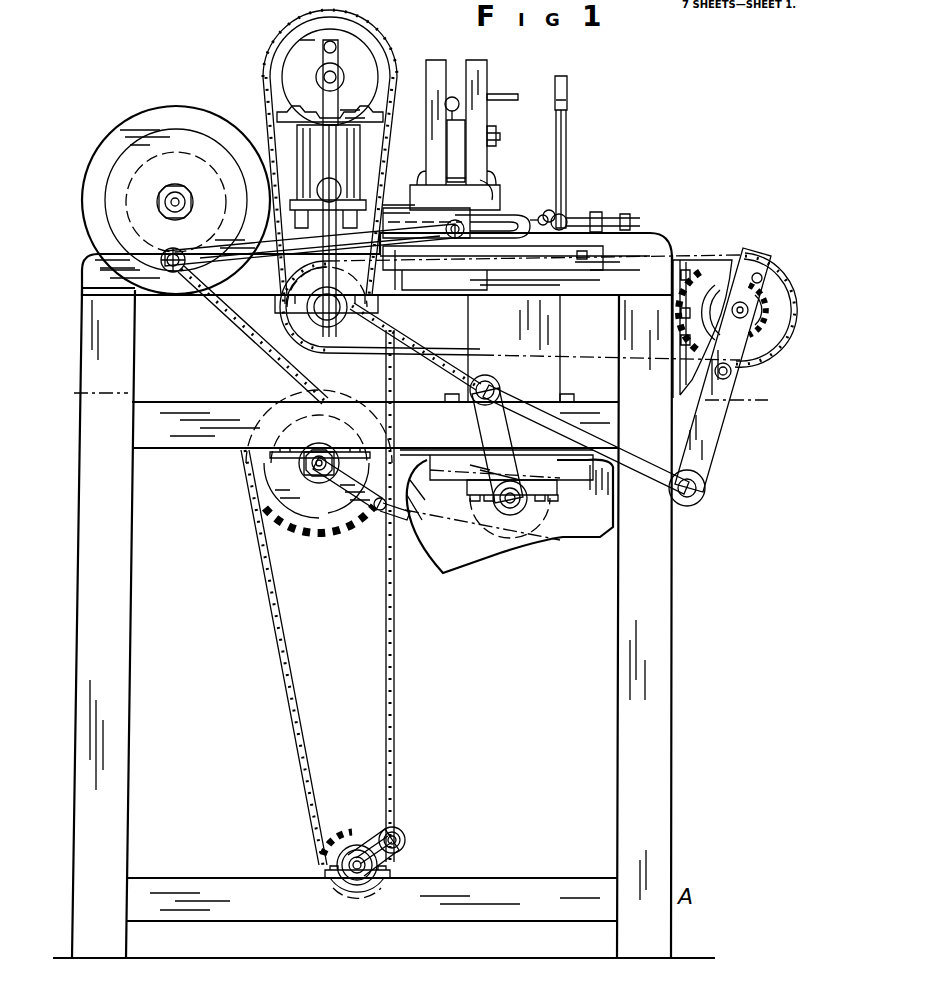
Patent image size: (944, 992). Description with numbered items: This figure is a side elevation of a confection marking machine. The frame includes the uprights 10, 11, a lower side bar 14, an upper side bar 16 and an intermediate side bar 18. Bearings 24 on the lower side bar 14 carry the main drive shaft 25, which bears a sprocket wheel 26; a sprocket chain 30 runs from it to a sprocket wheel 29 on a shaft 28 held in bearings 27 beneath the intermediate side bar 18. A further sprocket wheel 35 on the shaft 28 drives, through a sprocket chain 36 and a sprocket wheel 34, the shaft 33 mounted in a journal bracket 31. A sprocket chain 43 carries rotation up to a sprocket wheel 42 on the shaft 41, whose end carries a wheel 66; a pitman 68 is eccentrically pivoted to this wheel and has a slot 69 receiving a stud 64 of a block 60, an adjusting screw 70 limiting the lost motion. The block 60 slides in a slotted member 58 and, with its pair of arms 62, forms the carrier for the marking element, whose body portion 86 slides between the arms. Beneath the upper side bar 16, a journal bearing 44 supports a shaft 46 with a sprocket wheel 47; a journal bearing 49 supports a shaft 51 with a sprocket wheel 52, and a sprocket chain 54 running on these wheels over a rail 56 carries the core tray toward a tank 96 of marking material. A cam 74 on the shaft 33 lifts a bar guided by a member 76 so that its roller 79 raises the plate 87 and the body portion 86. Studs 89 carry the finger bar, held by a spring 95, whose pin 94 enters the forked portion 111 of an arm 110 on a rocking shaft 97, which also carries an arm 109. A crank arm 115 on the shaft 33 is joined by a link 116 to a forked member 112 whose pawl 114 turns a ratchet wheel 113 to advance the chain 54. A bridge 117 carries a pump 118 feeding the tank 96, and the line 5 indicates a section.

The section line 5 is at (419, 394).
The upright 10 is at (118, 765).
The upright 11 is at (660, 735).
The lower side bar 14 is at (205, 880).
The upper side bar 16 is at (98, 268).
The intermediate side bar 18 is at (207, 400).
The bearing 24 is at (345, 868).
The shaft 25 is at (345, 873).
The sprocket wheel 26 is at (362, 842).
The bearing 27 is at (262, 478).
The shaft 28 is at (300, 470).
The sprocket wheel 29 is at (303, 525).
The sprocket chain 30 is at (284, 680).
The journal bracket 31 is at (418, 450).
The shaft 33 is at (512, 522).
The sprocket wheel 34 is at (462, 540).
The sprocket wheel 35 is at (322, 485).
The sprocket chain 36 is at (388, 520).
The shaft 41 is at (175, 188).
The sprocket wheel 42 is at (235, 190).
The sprocket chain 43 is at (240, 322).
The journal bearing 44 is at (285, 318).
The shaft 46 is at (300, 318).
The sprocket wheel 47 is at (380, 324).
The journal bearing 49 is at (715, 262).
The shaft 51 is at (752, 308).
The sprocket wheel 52 is at (782, 345).
The sprocket chain 54 is at (742, 365).
The rail 56 is at (650, 236).
The slotted member 58 is at (568, 262).
The block 60 is at (492, 212).
The arms 62 is at (468, 60).
The stud 64 is at (462, 222).
The wheel 66 is at (112, 178).
The pitman 68 is at (208, 300).
The slot 69 is at (540, 215).
The adjusting screw 70 is at (556, 212).
The cam 74 is at (585, 512).
The member 76 is at (470, 320).
The roller 79 is at (482, 190).
The body portion 86 is at (455, 157).
The plate 87 is at (410, 194).
The stud 89 is at (497, 136).
The pin 94 is at (506, 94).
The spring 95 is at (455, 99).
The tank 96 is at (546, 208).
The shaft 97 is at (638, 216).
The arm 109 is at (426, 218).
The arm 110 is at (567, 158).
The forked portion 111 is at (567, 90).
The forked member 112 is at (712, 440).
The ratchet wheel 113 is at (768, 325).
The pawl 114 is at (762, 258).
The crank arm 115 is at (495, 425).
The link 116 is at (688, 506).
The bridge 117 is at (280, 268).
The pump 118 is at (362, 150).